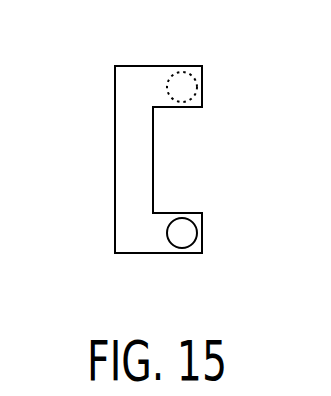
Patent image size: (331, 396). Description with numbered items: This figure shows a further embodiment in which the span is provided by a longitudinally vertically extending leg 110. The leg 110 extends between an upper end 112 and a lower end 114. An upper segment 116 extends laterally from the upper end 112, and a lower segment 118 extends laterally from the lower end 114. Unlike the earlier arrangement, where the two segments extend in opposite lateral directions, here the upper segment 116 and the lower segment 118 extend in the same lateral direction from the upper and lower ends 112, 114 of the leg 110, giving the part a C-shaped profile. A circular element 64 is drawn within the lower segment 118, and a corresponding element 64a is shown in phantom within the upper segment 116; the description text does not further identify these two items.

The leg 110 is at (122, 160).
The upper end 112 is at (122, 87).
The lower end 114 is at (122, 233).
The upper segment 116 is at (152, 77).
The lower segment 118 is at (153, 243).
The pin 64 is at (203, 225).
The pin in phantom position 64a is at (203, 78).